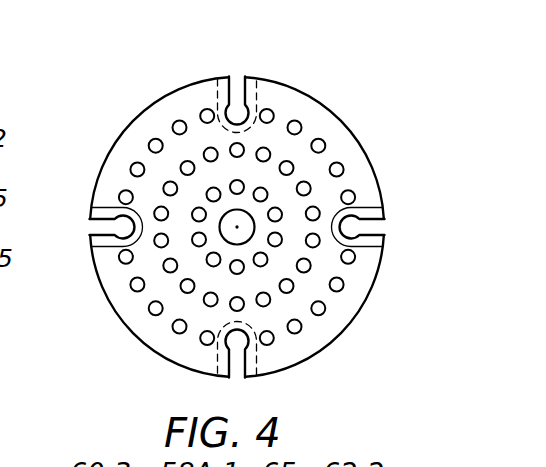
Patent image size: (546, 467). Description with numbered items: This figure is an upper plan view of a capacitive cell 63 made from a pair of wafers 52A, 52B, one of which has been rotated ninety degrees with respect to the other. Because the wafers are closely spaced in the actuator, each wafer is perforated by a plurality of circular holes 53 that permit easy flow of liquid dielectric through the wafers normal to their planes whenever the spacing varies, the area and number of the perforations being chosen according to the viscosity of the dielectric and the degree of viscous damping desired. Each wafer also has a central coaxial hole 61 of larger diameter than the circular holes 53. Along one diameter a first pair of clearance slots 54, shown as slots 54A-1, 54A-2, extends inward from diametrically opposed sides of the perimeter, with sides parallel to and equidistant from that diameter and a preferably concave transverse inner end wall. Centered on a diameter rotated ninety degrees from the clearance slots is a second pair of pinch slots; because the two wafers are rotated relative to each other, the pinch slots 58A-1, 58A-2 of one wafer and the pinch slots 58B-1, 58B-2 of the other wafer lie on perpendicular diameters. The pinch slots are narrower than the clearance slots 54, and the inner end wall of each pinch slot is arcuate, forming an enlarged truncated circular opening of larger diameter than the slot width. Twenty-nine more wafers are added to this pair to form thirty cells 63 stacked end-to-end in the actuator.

The capacitive cell 63 is at (155, 77).
The wafer 52A is at (341, 118).
The wafer 52B is at (386, 208).
The circular holes 53 is at (301, 328).
The clearance slots 54 is at (26, 235).
The clearance slot 54A-1 is at (384, 242).
The clearance slot 54A-2 is at (90, 209).
The pinch slot 58A-1 is at (239, 376).
The pinch slot 58A-2 is at (234, 85).
The pinch slot 58B-1 is at (374, 228).
The pinch slot 58B-2 is at (89, 235).
The central coaxial hole 61 is at (235, 229).